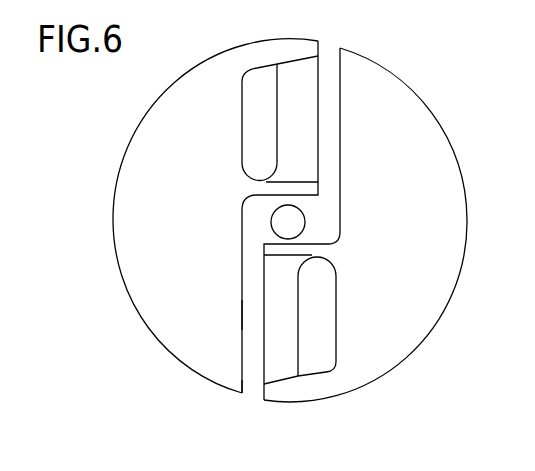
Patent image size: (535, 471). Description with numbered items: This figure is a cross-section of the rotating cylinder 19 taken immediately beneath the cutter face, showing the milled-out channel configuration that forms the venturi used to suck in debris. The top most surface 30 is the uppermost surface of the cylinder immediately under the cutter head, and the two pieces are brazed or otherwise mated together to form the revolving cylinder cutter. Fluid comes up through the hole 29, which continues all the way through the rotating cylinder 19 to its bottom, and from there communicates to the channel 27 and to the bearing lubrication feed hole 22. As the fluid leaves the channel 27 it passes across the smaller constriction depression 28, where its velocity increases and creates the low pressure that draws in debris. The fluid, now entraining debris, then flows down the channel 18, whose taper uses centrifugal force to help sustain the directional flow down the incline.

The rotating cylinder 19 is at (395, 74).
The top most surface 30 is at (398, 121).
The hole 29 is at (304, 217).
The constriction depression 28 is at (285, 355).
The channel 18 is at (337, 332).
The channel 27 is at (256, 313).
The bearing lubrication feed hole 22 is at (253, 394).